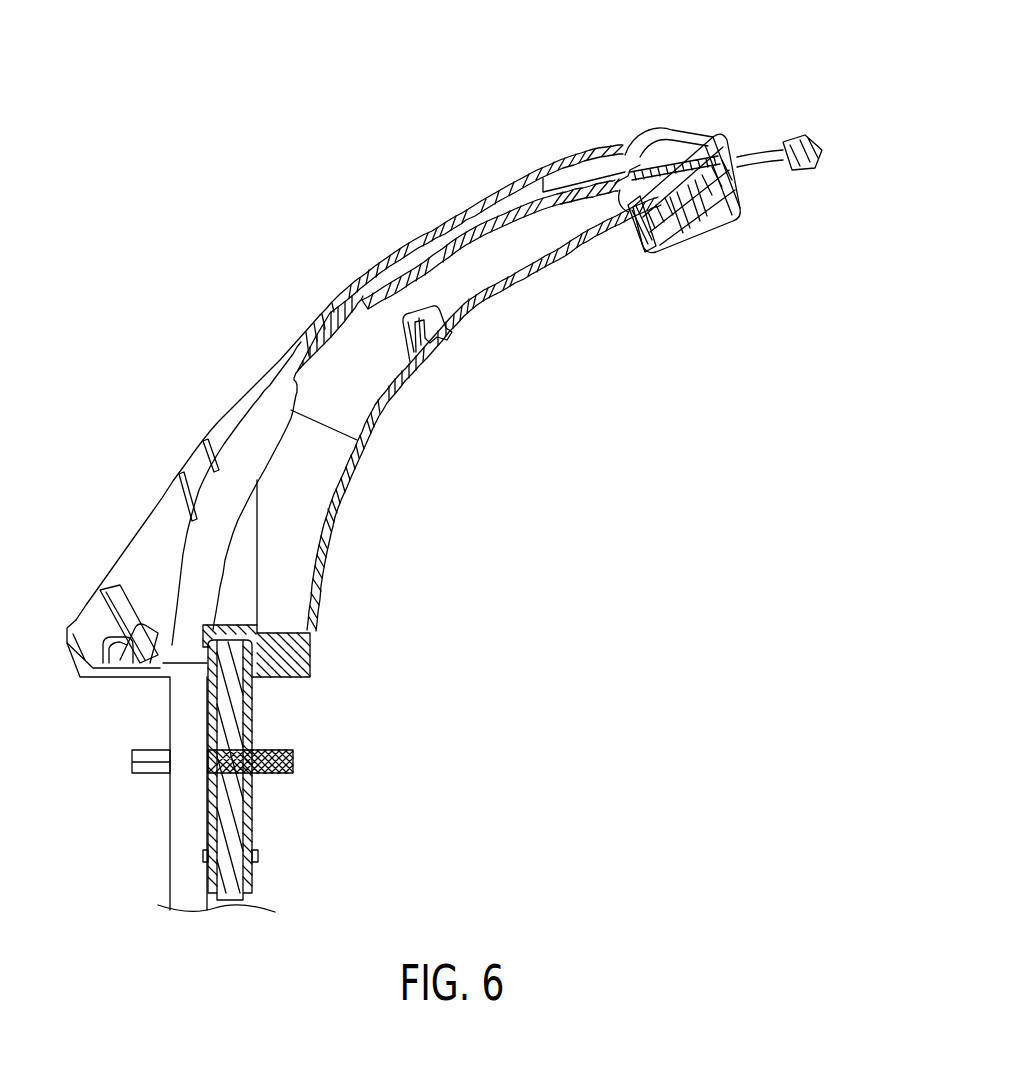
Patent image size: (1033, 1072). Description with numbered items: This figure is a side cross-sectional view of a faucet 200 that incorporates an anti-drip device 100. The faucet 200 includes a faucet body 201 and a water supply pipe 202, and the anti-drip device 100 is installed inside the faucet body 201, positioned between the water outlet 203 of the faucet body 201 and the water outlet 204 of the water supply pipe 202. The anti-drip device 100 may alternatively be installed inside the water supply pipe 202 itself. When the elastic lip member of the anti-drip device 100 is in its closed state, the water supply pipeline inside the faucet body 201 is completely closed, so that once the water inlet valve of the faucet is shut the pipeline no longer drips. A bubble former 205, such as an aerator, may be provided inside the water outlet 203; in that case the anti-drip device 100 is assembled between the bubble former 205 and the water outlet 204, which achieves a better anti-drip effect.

The anti-drip device 100 is at (655, 130).
The faucet 200 is at (322, 212).
The faucet body 201 is at (377, 377).
The water supply pipe 202 is at (240, 423).
The water outlet 203 is at (637, 232).
The water outlet 204 is at (623, 152).
The bubble former 205 is at (712, 220).